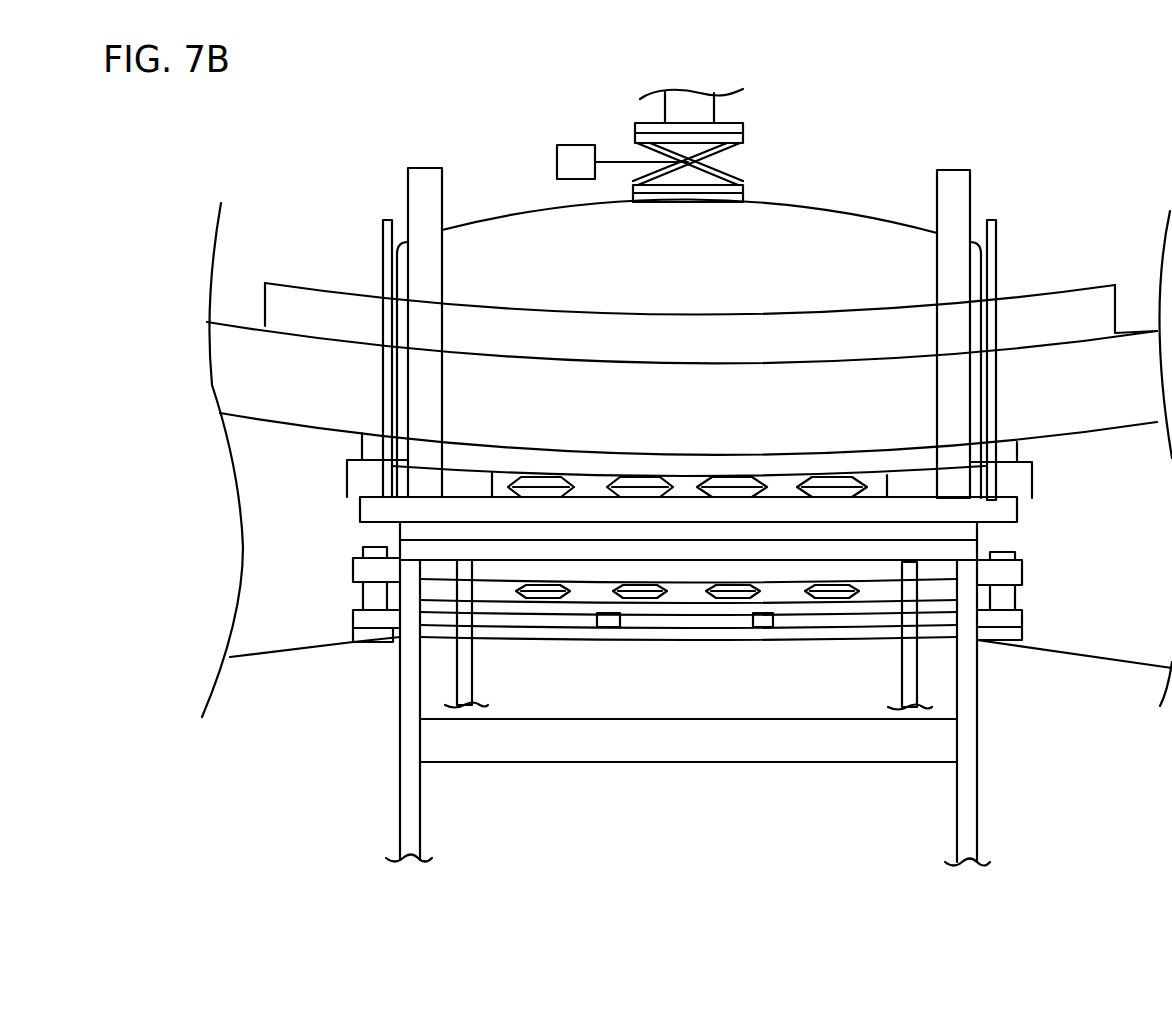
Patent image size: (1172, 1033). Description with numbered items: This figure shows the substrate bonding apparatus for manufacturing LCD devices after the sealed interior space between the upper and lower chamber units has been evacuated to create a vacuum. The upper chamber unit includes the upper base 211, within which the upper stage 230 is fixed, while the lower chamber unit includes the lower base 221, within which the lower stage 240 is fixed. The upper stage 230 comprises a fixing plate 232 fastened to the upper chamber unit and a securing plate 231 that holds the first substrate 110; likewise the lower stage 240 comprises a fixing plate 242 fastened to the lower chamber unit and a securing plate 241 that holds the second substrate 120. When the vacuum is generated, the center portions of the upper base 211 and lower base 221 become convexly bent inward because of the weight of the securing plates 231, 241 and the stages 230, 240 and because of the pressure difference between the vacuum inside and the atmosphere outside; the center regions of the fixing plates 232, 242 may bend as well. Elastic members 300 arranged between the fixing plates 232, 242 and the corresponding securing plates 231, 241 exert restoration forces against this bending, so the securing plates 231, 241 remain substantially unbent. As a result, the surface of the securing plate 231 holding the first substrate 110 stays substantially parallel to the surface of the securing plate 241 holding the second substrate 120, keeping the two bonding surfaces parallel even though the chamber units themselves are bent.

The first substrate 110 is at (458, 532).
The second substrate 120 is at (565, 543).
The upper base 211 is at (1115, 431).
The lower base 221 is at (1113, 658).
The upper stage 230 is at (788, 130).
The securing plate 231 is at (772, 510).
The fixing plate 232 is at (866, 462).
The lower stage 240 is at (657, 843).
The securing plate 241 is at (732, 572).
The fixing plate 242 is at (648, 603).
The elastic members 300 is at (688, 487).